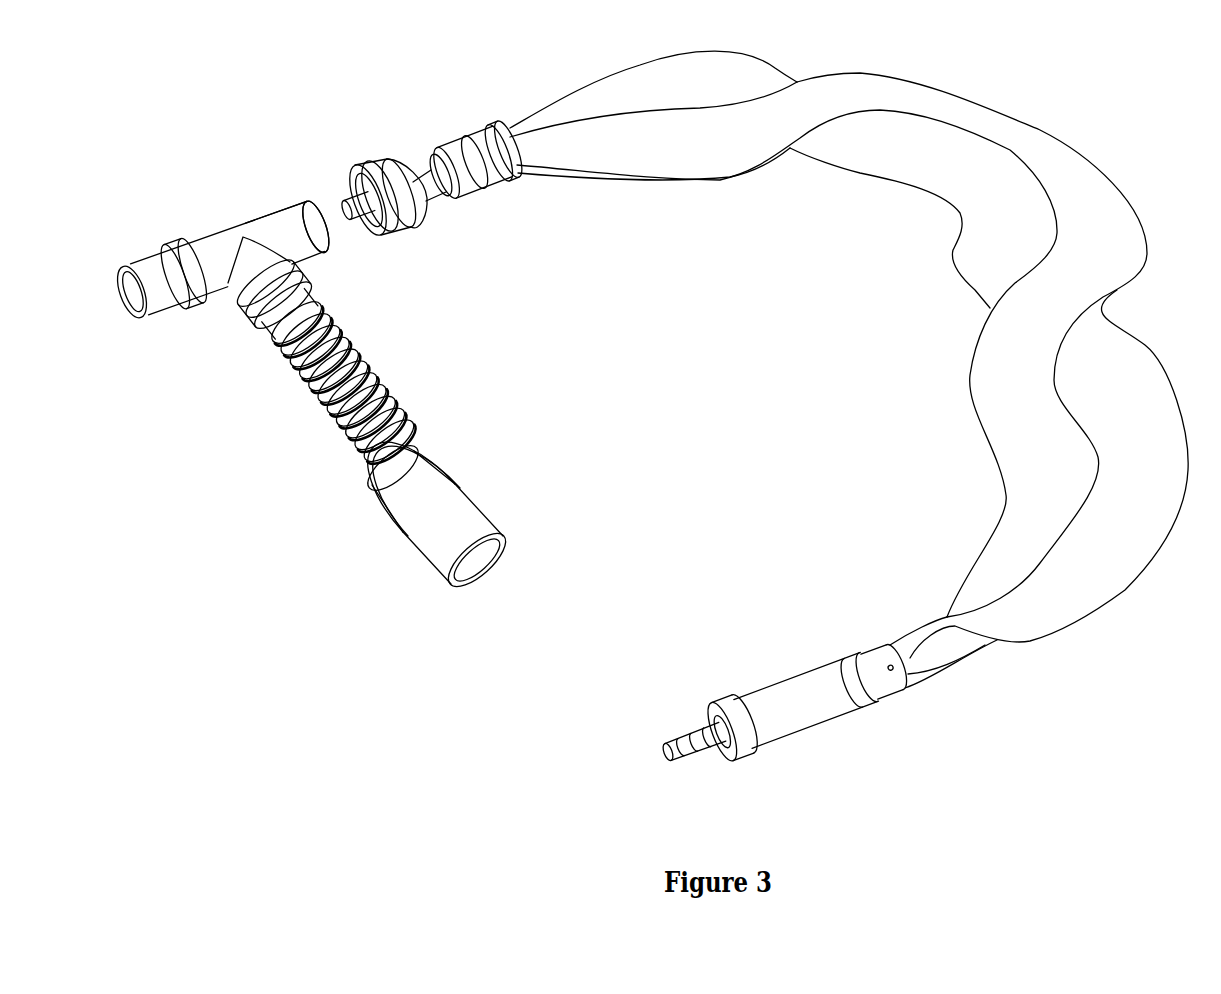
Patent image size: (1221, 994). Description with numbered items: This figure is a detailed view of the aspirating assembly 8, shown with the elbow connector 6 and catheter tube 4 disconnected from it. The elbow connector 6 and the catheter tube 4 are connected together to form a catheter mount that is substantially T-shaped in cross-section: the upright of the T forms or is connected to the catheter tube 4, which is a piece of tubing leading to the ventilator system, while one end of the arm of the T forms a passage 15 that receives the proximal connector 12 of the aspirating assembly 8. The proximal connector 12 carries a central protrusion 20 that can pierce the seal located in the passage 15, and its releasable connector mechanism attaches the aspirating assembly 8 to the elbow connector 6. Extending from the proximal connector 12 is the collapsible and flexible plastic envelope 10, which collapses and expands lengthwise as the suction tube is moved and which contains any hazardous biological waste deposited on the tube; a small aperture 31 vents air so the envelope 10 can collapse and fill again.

The catheter tube 4 is at (347, 443).
The elbow connector 6 is at (210, 220).
The aspirating assembly 8 is at (724, 374).
The plastic envelope 10 is at (1010, 507).
The proximal connector 12 is at (407, 238).
The passage 15 is at (298, 213).
The central protrusion 20 is at (352, 228).
The aperture 31 is at (898, 678).